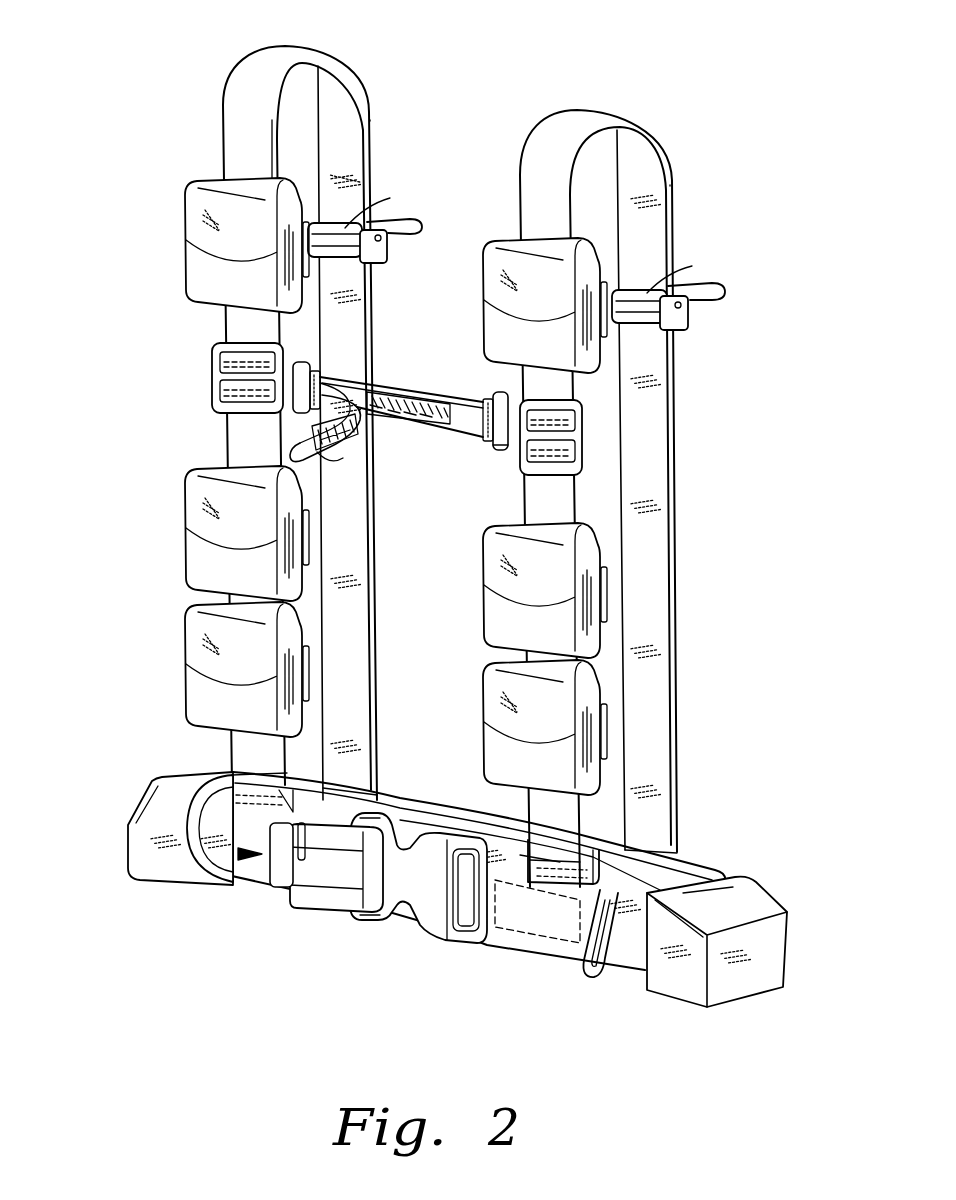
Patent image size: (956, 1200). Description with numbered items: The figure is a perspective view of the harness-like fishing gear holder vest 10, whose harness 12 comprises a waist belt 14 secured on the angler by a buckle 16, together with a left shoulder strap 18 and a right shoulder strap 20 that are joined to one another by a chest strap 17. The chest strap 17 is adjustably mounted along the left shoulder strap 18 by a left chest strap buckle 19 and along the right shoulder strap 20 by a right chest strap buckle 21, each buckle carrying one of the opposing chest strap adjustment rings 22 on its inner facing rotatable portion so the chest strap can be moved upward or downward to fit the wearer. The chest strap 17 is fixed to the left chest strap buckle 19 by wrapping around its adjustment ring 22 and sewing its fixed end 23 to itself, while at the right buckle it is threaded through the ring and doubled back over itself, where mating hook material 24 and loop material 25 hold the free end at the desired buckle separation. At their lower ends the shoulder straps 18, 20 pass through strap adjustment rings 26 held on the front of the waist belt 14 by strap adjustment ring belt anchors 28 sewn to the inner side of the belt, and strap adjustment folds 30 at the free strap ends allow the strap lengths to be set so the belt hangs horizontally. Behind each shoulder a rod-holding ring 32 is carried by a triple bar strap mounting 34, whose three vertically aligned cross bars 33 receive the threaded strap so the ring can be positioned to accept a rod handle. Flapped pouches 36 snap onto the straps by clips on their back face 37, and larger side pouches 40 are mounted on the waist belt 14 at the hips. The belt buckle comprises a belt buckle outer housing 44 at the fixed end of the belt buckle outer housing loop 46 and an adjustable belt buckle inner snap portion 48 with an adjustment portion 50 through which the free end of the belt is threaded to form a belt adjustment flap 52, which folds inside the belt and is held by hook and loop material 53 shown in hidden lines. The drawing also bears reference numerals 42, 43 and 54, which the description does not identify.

The harness-like vest 10 is at (690, 110).
The harness 12 is at (535, 105).
The waist belt 14 is at (233, 872).
The buckle 16 is at (340, 900).
The chest strap 17 is at (455, 447).
The left shoulder strap 18 is at (677, 438).
The left chest strap buckle 19 is at (583, 452).
The right shoulder strap 20 is at (252, 62).
The right chest strap buckle 21 is at (212, 377).
The chest strap adjustment rings 22 is at (320, 377).
The fixed end 23 is at (477, 437).
The hook material 24 is at (292, 455).
The loop material 25 is at (433, 422).
The strap adjustment rings 26 is at (190, 872).
The strap adjustment ring belt anchors 28 is at (247, 800).
The strap adjustment folds 30 is at (310, 780).
The rod-holding ring 32 is at (428, 222).
The cross bars 33 is at (338, 230).
The triple bar strap mounting 34 is at (388, 258).
The flapped pouches 36 is at (200, 237).
The back face 37 is at (283, 185).
The side pouches 40 is at (133, 853).
The belt clip 42 is at (283, 890).
The belt end loop 43 is at (605, 962).
The belt buckle outer housing 44 is at (387, 898).
The belt buckle outer housing loop 46 is at (343, 883).
The adjustable belt buckle inner snap portion 48 is at (400, 836).
The adjustment portion 50 is at (482, 943).
The belt adjustment flap 52 is at (523, 840).
The hook and loop material 53 is at (518, 957).
The strap stitching 54 is at (385, 795).